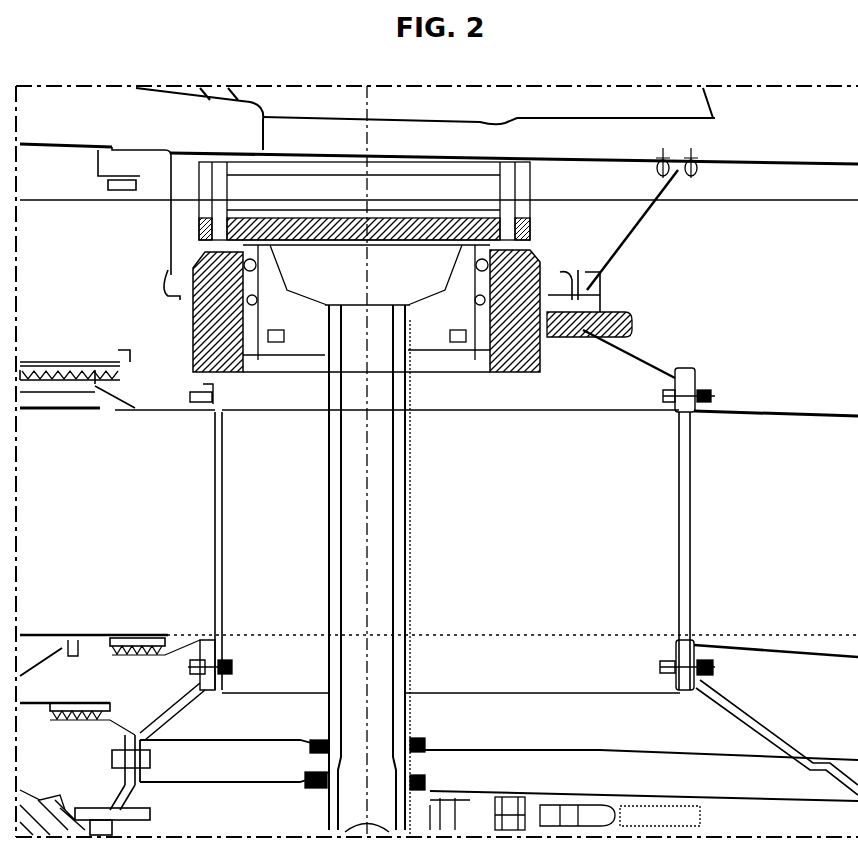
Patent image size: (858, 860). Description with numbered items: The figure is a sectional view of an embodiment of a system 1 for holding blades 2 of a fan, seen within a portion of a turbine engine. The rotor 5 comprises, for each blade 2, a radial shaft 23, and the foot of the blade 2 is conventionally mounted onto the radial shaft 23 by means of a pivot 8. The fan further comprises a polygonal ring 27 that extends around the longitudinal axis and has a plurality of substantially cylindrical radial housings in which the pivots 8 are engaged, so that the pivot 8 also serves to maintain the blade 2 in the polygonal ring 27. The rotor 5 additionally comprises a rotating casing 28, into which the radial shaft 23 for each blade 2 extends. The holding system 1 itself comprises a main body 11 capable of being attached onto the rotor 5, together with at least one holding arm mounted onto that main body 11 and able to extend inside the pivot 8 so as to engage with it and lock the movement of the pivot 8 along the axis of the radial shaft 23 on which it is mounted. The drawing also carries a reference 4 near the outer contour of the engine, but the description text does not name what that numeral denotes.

The holding system 1 is at (382, 534).
The blade 2 is at (612, 106).
The fan cowl 4 is at (326, 135).
The rotor 5 is at (128, 478).
The pivot 8 is at (424, 320).
The main body 11 is at (382, 669).
The radial shaft 23 is at (416, 603).
The polygonal ring 27 is at (182, 333).
The rotating casing 28 is at (206, 506).